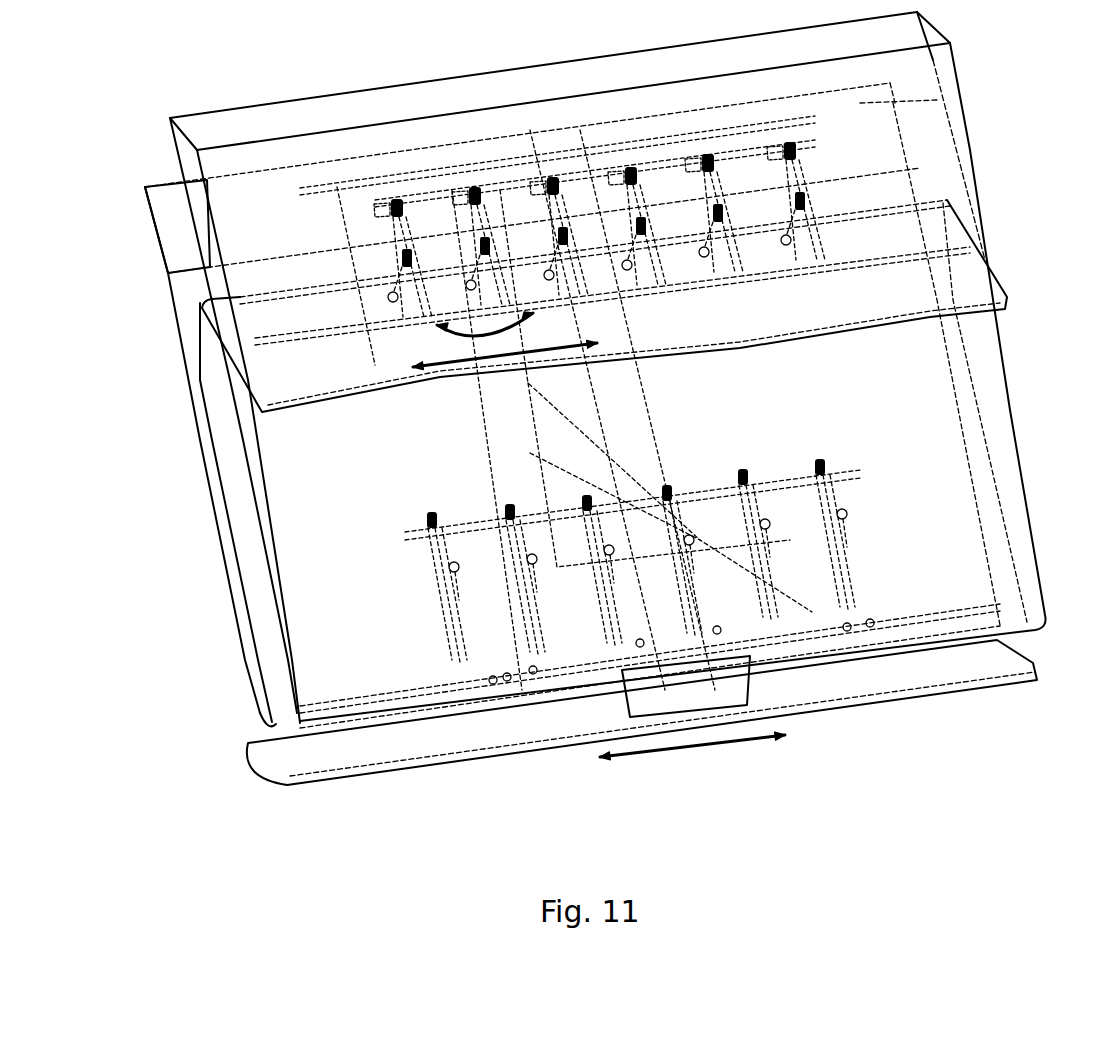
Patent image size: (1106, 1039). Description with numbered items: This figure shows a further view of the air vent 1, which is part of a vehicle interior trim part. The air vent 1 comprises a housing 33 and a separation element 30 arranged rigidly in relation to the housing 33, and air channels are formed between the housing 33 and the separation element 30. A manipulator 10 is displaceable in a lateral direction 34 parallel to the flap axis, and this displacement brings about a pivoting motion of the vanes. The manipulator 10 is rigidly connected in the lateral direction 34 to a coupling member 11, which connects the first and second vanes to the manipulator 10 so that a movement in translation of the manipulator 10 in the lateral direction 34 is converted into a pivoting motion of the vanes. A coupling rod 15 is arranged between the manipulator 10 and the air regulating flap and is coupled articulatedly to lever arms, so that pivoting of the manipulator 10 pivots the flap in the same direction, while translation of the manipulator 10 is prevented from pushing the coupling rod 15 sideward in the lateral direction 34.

The air vent 1 is at (1022, 98).
The manipulator 10 is at (752, 690).
The coupling member 11 is at (490, 482).
The coupling rod 15 is at (647, 402).
The separation element 30 is at (1020, 443).
The housing 33 is at (983, 188).
The lateral direction 34 is at (447, 367).